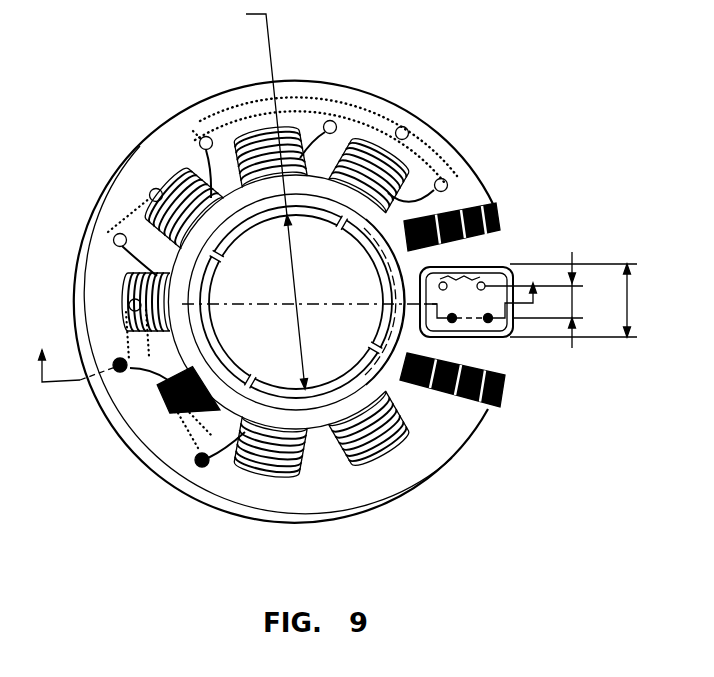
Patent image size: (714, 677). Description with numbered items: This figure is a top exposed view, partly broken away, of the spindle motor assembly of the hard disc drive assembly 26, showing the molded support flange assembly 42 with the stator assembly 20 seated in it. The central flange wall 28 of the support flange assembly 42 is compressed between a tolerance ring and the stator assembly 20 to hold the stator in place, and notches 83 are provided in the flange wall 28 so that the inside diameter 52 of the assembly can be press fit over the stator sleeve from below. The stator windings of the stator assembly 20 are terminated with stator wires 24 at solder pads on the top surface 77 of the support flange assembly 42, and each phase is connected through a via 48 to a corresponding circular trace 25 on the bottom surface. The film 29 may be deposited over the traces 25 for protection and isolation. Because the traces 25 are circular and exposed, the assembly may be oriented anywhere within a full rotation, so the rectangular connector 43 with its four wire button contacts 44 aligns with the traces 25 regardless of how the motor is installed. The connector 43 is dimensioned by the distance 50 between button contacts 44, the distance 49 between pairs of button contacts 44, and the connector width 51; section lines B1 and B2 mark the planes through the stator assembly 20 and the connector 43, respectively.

The stator assembly 20 is at (263, 257).
The stator wires 24 is at (198, 456).
The traces 25 is at (377, 112).
The hard disc drive assembly 26 is at (683, 142).
The flange wall 28 is at (296, 302).
The film 29 is at (322, 507).
The support flange assembly 42 is at (317, 308).
The connector 43 is at (510, 283).
The button contacts 44 is at (452, 318).
The vias 48 is at (410, 132).
The distance between pairs of button contacts 49 is at (548, 300).
The distance between button contacts 50 is at (420, 278).
The connector width 51 is at (573, 300).
The inside diameter 52 is at (309, 195).
The top surface 77 is at (267, 305).
The notches 83 is at (214, 259).
The section B1 is at (70, 352).
The section B2 is at (534, 253).